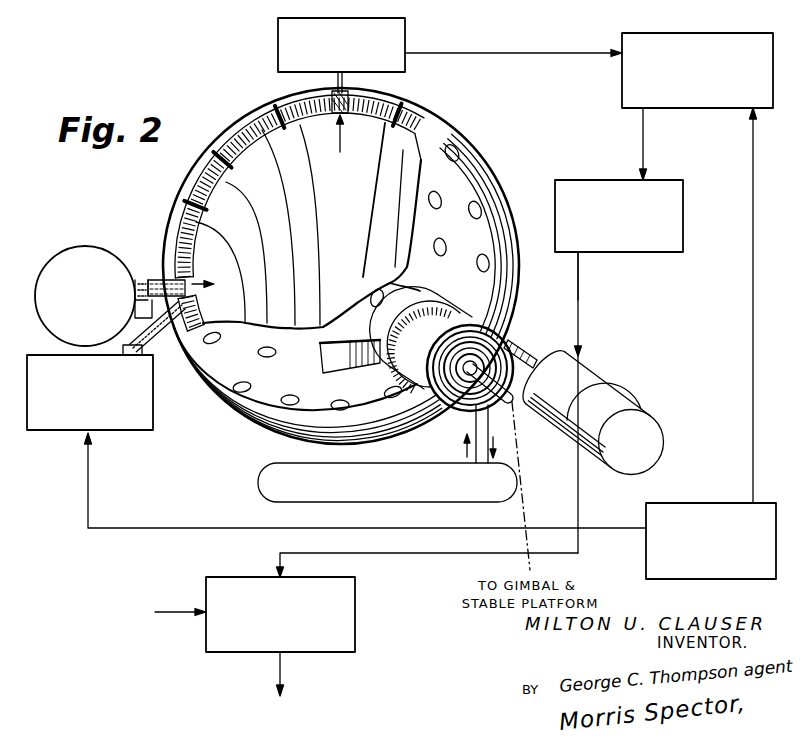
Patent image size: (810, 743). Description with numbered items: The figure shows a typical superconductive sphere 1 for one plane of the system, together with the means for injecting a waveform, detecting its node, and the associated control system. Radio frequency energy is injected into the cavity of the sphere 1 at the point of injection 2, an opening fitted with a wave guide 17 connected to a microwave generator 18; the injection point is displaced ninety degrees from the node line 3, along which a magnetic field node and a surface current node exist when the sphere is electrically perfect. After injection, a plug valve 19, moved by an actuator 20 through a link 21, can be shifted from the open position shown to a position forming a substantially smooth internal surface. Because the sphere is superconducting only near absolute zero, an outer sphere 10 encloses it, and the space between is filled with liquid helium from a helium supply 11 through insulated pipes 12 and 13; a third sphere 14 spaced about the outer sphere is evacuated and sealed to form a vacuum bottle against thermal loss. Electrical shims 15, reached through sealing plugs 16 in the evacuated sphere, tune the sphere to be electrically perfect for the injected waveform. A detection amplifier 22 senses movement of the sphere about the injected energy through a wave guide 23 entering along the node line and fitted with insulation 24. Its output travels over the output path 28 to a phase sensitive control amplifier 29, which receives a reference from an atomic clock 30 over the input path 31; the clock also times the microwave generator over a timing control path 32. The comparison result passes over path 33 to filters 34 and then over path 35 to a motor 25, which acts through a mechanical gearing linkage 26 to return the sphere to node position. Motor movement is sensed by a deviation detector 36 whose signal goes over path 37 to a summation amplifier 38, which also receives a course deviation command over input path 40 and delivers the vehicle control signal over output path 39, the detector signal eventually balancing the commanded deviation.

The superconductive sphere 1 is at (418, 144).
The point of injection 2 is at (203, 273).
The node line 3 is at (340, 142).
The outer sphere 10 is at (420, 114).
The helium supply 11 is at (374, 461).
The insulated pipe 12 is at (470, 459).
The insulated pipe 13 is at (490, 425).
The third sphere 14 is at (479, 158).
The electrical shims 15 is at (228, 160).
The sealing plugs 16 is at (204, 138).
The wave guide 17 is at (165, 320).
The microwave generator 18 is at (153, 424).
The plug valve 19 is at (172, 280).
The actuator 20 is at (43, 262).
The link 21 is at (146, 280).
The detection amplifier 22 is at (405, 42).
The wave guide 23 is at (345, 78).
The insulation 24 is at (332, 97).
The motor 25 is at (580, 356).
The mechanical gearing linkage 26 is at (511, 341).
The output path 28 is at (535, 53).
The control amplifier 29 is at (722, 34).
The atomic clock 30 is at (702, 503).
The input path 31 is at (752, 268).
The timing control path 32 is at (160, 528).
The path 33 is at (641, 134).
The filters 34 is at (655, 180).
The path 35 is at (578, 278).
The deviation detector 36 is at (644, 405).
The path 37 is at (578, 468).
The summation amplifier 38 is at (355, 581).
The output path 39 is at (281, 668).
The input path 40 is at (175, 612).